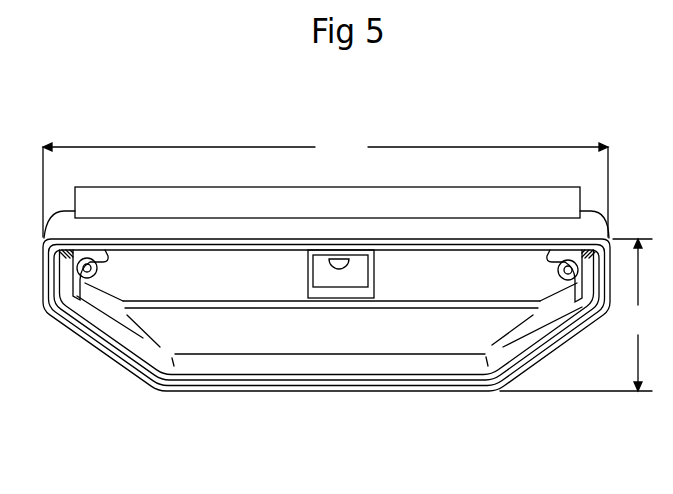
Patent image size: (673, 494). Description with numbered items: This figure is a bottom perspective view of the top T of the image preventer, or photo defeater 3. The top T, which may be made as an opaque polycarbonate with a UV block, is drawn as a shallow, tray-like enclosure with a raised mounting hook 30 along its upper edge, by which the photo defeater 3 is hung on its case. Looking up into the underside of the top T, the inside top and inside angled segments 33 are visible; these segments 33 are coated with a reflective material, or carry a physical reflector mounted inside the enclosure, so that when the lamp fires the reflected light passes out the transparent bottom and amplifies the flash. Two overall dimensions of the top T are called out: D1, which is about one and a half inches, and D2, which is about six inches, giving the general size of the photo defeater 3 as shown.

The photo defeater 3 is at (516, 94).
The mounting hook 30 is at (225, 203).
The inside top and inside angled segments 33 is at (367, 342).
The top T is at (132, 375).
The dimension D1 is at (576, 315).
The dimension D2 is at (325, 187).